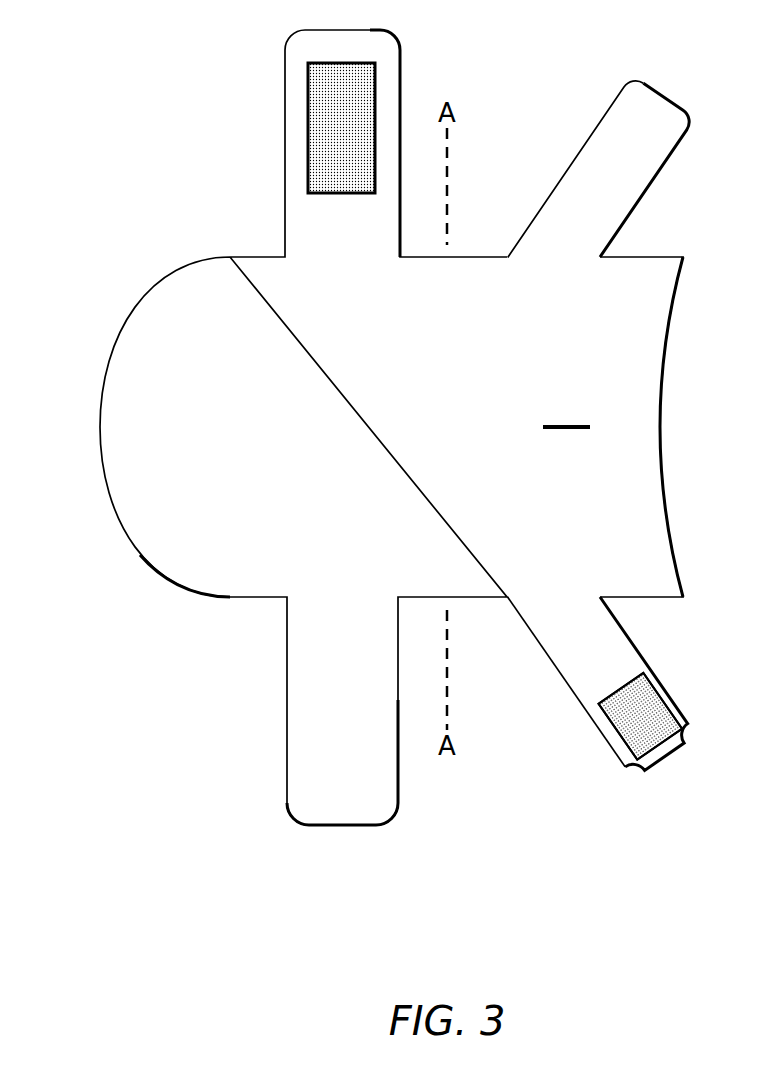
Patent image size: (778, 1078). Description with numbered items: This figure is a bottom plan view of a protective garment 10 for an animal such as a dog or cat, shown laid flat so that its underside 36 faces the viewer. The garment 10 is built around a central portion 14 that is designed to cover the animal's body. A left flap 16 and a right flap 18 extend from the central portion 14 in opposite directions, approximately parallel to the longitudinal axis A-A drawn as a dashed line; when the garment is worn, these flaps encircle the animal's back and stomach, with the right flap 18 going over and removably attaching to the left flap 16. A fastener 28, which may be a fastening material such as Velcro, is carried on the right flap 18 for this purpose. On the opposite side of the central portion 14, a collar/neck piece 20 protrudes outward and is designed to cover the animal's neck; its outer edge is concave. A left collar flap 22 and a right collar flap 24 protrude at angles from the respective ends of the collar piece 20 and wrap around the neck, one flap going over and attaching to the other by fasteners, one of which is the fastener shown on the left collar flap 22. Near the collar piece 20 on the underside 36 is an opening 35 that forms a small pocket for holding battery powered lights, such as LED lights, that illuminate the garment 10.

The protective garment 10 is at (90, 294).
The central portion 14 is at (437, 523).
The left flap 16 is at (400, 768).
The right flap 18 is at (403, 70).
The collar/neck piece 20 is at (635, 407).
The left collar flap 22 is at (608, 694).
The right collar flap 24 is at (657, 110).
The fastener 28 is at (330, 117).
The opening 35 is at (563, 424).
The underside 36 is at (135, 548).